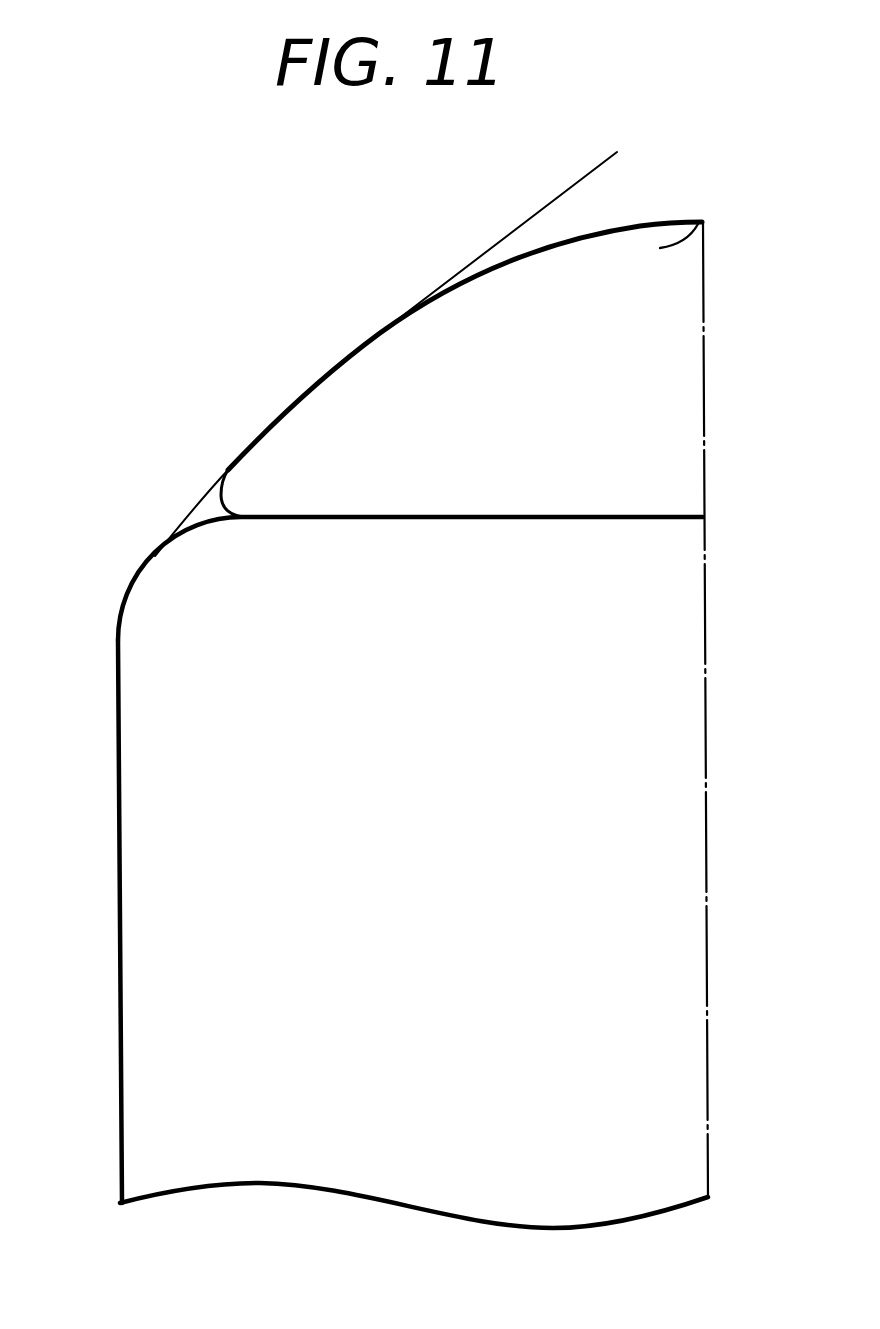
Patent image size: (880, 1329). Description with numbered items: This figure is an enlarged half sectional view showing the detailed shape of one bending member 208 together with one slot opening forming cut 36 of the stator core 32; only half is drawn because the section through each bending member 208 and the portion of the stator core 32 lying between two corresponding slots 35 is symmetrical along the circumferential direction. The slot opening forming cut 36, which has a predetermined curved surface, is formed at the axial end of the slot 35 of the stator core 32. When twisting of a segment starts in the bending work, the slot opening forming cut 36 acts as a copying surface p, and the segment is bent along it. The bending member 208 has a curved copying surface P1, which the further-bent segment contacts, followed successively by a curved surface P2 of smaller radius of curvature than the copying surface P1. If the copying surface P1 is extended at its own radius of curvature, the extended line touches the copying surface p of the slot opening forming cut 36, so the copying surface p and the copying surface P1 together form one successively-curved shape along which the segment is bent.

The stator core 32 is at (210, 1160).
The slot 35 is at (72, 658).
The slot opening forming cut 36 is at (158, 534).
The copying surface p is at (151, 568).
The copying surface P1 is at (376, 335).
The curved surface P2 is at (381, 334).
The bending member 208 is at (660, 233).